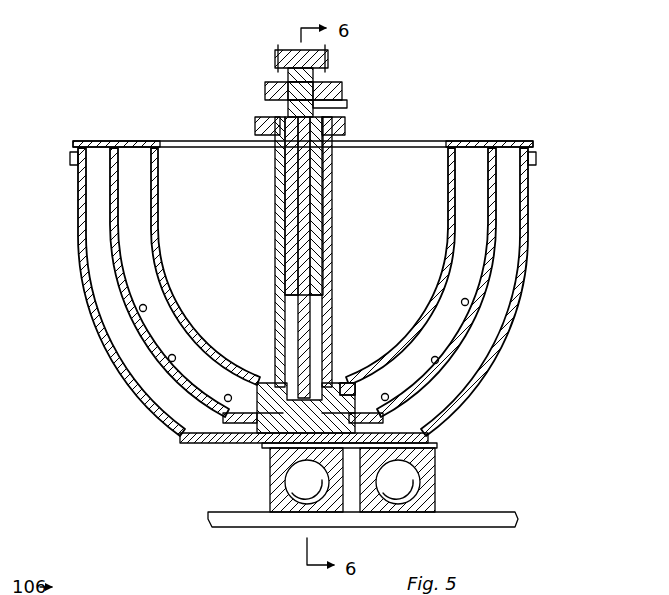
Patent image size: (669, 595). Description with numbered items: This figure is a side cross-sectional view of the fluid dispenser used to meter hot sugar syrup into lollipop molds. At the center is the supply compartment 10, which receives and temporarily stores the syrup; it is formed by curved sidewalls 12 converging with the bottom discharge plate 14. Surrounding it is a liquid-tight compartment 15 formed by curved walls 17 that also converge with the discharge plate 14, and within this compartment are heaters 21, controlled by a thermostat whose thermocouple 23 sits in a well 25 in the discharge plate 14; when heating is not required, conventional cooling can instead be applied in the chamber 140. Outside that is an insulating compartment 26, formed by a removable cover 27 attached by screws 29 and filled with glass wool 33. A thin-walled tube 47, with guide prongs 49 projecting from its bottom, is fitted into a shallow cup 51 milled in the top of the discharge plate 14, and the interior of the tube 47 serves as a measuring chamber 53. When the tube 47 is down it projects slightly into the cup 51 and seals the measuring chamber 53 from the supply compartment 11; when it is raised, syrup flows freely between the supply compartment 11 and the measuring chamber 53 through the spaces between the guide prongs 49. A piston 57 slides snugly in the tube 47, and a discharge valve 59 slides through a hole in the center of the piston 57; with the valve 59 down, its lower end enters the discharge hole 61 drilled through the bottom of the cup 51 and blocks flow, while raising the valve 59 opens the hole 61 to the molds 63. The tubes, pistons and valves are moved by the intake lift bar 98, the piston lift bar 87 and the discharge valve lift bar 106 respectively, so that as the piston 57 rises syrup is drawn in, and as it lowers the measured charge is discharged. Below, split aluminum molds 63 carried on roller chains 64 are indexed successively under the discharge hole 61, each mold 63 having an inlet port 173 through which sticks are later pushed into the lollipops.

The supply compartment 10 is at (160, 252).
The supply compartment 11 is at (396, 198).
The curved sidewalls 12 is at (170, 298).
The bottom discharge plate 14 is at (268, 383).
The liquid-tight compartment 15 is at (135, 350).
The curved walls 17 is at (110, 248).
The heaters 21 is at (145, 418).
The thermocouple 23 is at (345, 383).
The well 25 is at (352, 395).
The insulating compartment 26 is at (105, 322).
The removable cover 27 is at (482, 140).
The screws 29 is at (70, 157).
The glass wool 33 is at (95, 182).
The thin-walled tube 47 is at (275, 200).
The guide prongs 49 is at (265, 445).
The shallow cups 51 is at (365, 400).
The measuring chamber 53 is at (290, 305).
The piston 57 is at (348, 104).
The discharge valve 59 is at (275, 68).
The discharge hole 61 is at (260, 392).
The split aluminum molds 63 is at (432, 500).
The roller chains 64 is at (455, 527).
The piston lift bar 87 is at (343, 93).
The intake lift bar 98 is at (345, 126).
The discharge valve lift bar 106 is at (330, 55).
The chamber 140 is at (143, 155).
The inlet port 173 is at (437, 447).